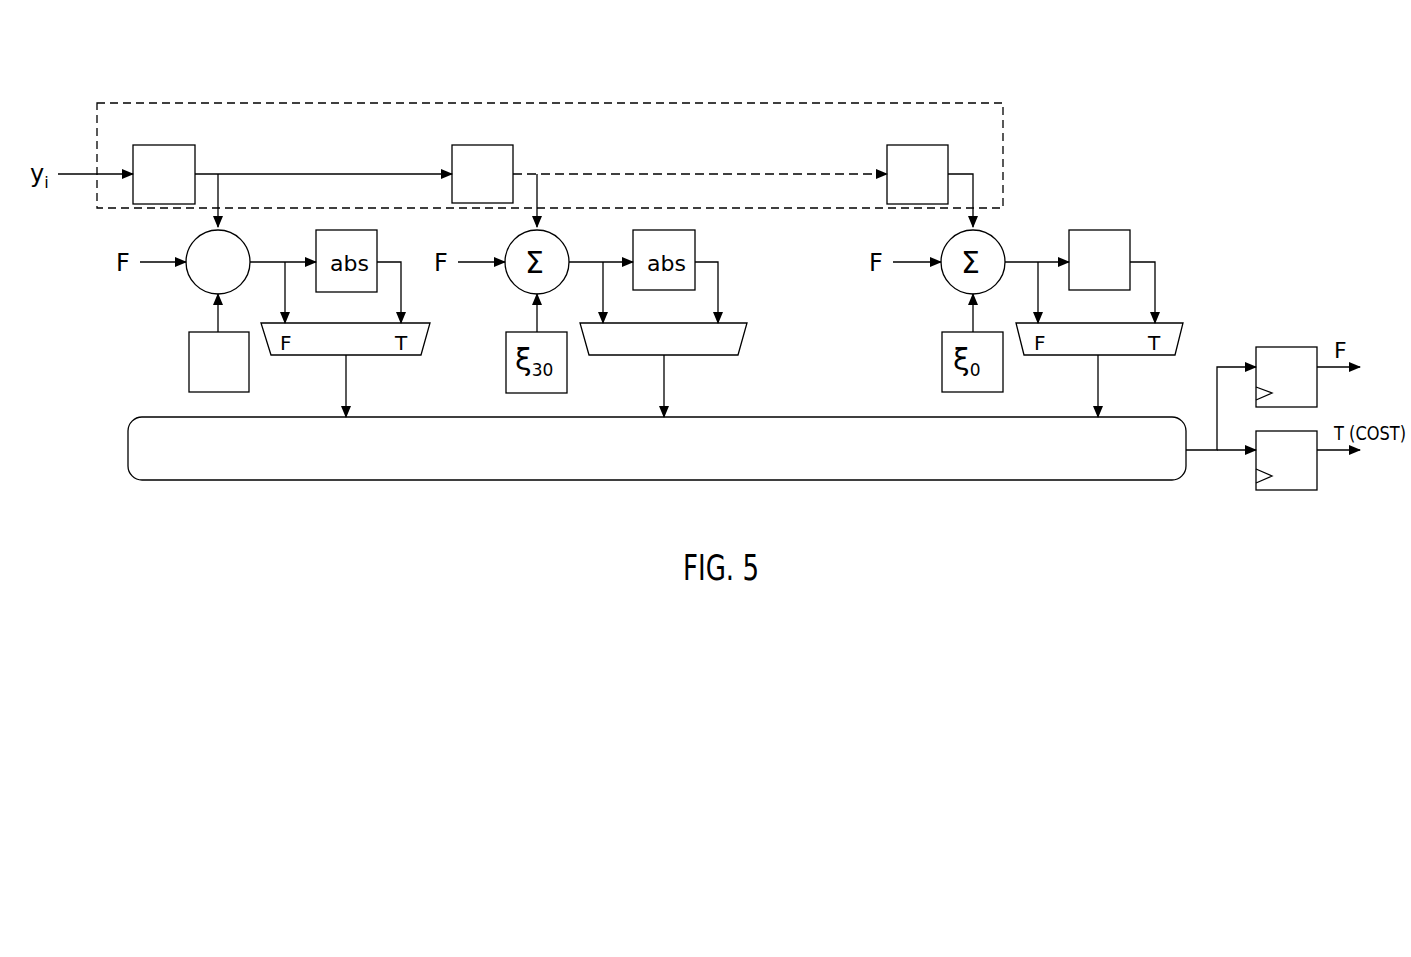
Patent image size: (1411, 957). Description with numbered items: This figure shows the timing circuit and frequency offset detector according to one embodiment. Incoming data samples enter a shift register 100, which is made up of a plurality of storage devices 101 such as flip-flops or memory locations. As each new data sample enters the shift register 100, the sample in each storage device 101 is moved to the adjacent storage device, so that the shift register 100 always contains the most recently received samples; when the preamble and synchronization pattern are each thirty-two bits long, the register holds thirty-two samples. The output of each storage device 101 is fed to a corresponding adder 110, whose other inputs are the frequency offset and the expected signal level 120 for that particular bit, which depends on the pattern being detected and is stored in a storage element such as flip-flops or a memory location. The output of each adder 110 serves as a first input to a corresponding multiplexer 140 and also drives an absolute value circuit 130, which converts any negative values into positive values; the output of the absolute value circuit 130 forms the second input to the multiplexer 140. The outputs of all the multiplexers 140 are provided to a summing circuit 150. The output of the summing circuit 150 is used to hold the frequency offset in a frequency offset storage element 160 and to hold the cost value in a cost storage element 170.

The shift register 100 is at (550, 125).
The storage device 101 is at (916, 145).
The adder 110 is at (195, 285).
The expected signal level 120 is at (189, 368).
The absolute value circuit 130 is at (1110, 230).
The multiplexer 140 is at (703, 348).
The summing circuit 150 is at (277, 468).
The frequency offset storage element 160 is at (1297, 347).
The cost storage element 170 is at (1283, 490).